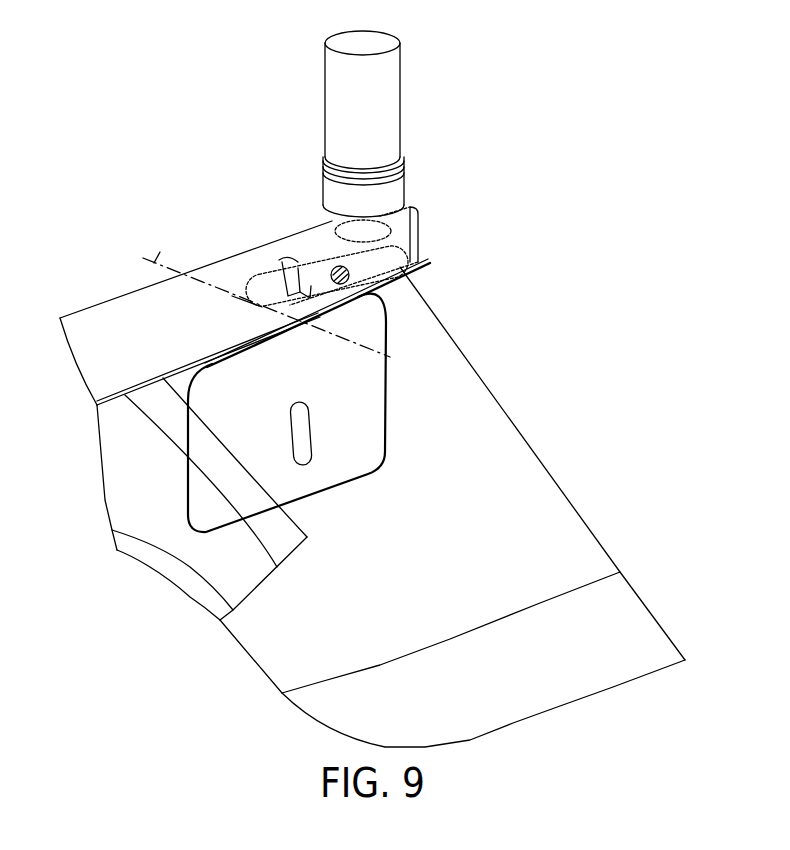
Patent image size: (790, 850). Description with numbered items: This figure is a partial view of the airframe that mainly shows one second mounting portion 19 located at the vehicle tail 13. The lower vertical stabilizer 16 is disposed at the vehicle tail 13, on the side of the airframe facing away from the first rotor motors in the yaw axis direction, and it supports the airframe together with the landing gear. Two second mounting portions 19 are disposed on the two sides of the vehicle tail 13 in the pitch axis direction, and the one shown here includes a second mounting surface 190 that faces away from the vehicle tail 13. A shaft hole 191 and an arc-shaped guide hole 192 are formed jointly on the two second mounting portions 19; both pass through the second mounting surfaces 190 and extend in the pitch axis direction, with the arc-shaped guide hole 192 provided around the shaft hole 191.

The vehicle tail 13 is at (95, 325).
The lower vertical stabilizer 16 is at (530, 480).
The second mounting portion 19 is at (246, 249).
The second mounting surface 190 is at (397, 257).
The shaft hole 191 is at (341, 266).
The arc-shaped guide hole 192 is at (290, 262).